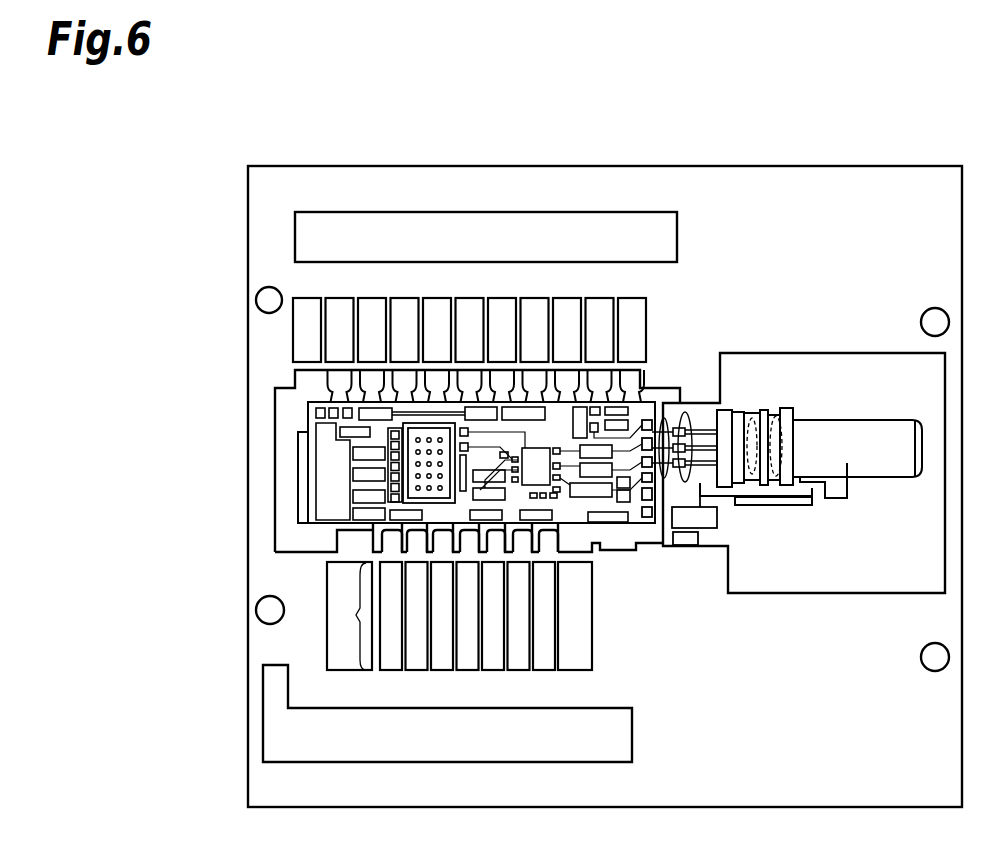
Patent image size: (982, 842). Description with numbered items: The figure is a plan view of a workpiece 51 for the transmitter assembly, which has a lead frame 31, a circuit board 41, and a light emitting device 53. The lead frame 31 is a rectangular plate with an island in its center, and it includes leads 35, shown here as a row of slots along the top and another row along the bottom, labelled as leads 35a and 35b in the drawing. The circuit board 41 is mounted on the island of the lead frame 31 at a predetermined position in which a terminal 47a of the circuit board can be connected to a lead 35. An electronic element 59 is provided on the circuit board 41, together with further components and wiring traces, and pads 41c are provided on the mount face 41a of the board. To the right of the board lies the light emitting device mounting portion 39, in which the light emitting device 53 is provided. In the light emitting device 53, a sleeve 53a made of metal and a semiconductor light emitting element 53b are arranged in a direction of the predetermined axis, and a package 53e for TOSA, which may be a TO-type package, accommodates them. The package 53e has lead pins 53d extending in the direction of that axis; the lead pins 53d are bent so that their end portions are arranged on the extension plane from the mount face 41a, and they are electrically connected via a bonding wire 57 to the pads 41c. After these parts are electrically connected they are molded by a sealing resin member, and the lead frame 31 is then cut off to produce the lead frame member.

The lead frame 31 is at (630, 180).
The lead 35 is at (320, 343).
The frame 35a is at (355, 538).
The lower slots 35b is at (357, 615).
The light emitting device mounting portion 39 is at (726, 405).
The circuit board 41 is at (308, 415).
The mount face 41a is at (639, 400).
The pads 41c is at (649, 523).
The terminal 47a is at (323, 397).
The workpiece 51 is at (758, 162).
The light emitting device 53 is at (723, 513).
The sleeve 53a is at (887, 437).
The semiconductor light emitting element 53b is at (760, 407).
The lead pins 53d is at (692, 412).
The package 53e is at (742, 410).
The bonding wire 57 is at (663, 460).
The electronic element 59 is at (437, 432).